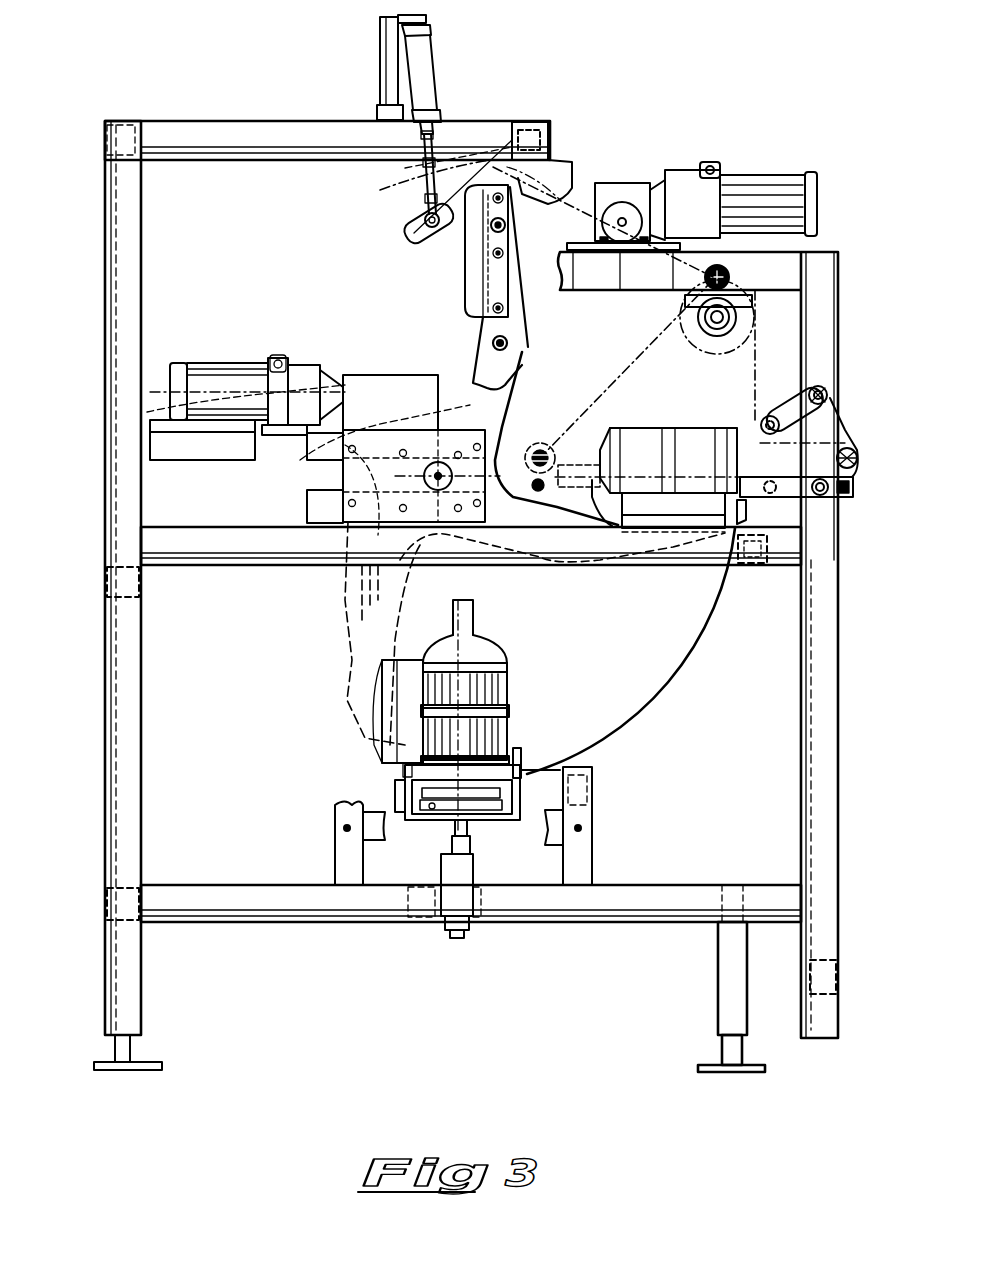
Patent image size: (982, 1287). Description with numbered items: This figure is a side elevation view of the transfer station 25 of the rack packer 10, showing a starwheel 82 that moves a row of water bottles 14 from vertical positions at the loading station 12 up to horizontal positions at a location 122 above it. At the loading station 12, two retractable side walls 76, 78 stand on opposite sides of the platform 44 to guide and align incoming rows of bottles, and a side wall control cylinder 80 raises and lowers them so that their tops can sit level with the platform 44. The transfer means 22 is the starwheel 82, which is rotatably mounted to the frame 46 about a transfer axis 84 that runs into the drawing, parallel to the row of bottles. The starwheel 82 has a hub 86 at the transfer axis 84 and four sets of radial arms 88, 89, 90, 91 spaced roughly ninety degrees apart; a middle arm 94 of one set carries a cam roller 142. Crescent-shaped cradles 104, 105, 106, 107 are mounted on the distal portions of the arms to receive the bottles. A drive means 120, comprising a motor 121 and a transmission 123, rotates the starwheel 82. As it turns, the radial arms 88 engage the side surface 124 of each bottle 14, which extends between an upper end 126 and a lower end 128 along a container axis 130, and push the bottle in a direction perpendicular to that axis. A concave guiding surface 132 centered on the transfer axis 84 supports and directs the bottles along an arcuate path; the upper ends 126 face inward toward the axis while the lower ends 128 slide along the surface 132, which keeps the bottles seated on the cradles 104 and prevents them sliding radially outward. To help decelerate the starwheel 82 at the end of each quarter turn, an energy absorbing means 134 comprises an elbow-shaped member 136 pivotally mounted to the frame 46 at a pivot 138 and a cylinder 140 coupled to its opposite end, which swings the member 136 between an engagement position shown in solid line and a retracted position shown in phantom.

The rack packer 10 is at (735, 120).
The loading station 12 is at (325, 742).
The water bottles 14 is at (613, 432).
The transfer means 22 is at (343, 288).
The transfer station 25 is at (93, 348).
The platform 44 is at (433, 806).
The frame 46 is at (830, 757).
The retractable side wall 76 is at (403, 793).
The retractable side wall 78 is at (522, 755).
The side wall control cylinder 80 is at (470, 876).
The starwheel 82 is at (445, 404).
The transfer axis 84 is at (432, 482).
The hub 86 is at (498, 445).
The set of radial arms 88 is at (343, 648).
The set of radial arms 89 is at (672, 556).
The set of radial arms 90 is at (540, 347).
The set of radial arms 91 is at (300, 437).
The arm upper portion 94 is at (525, 308).
The set of cradles 104 is at (403, 650).
The set of cradles 105 is at (749, 507).
The set of cradles 106 is at (468, 240).
The set of cradles 107 is at (186, 462).
The drive means 120 is at (240, 353).
The motor 121 is at (307, 372).
The location 122 is at (722, 410).
The transmission 123 is at (380, 375).
The side surface 124 is at (513, 682).
The upper end 126 is at (470, 630).
The lower end 128 is at (508, 735).
The container axis 130 is at (504, 641).
The concave guiding surface 132 is at (657, 700).
The energy absorbing means 134 is at (459, 91).
The elbow-shaped member 136 is at (455, 198).
The pivot 138 is at (547, 203).
The cylinder 140 is at (428, 78).
The cam roller 142 is at (508, 212).